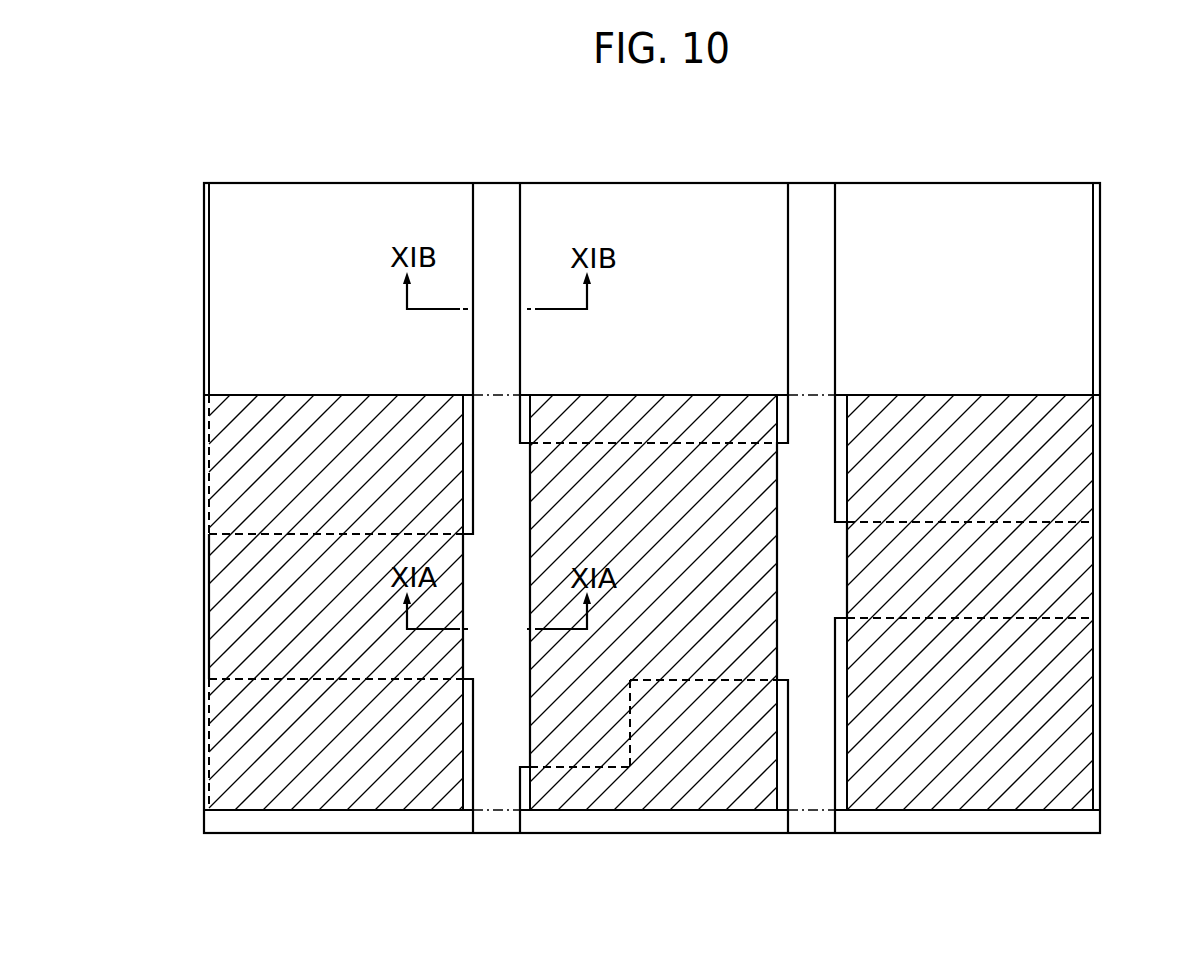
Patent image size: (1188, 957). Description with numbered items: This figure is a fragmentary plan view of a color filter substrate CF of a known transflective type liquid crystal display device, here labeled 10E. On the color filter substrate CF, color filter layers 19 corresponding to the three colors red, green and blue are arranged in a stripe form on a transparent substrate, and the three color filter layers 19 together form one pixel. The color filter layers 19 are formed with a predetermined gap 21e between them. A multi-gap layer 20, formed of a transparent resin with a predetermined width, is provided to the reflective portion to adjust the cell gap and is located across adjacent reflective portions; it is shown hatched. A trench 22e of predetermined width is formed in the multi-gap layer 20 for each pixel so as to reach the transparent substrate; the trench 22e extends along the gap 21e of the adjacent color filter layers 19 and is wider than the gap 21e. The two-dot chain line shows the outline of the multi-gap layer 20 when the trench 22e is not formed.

The color filter substrate 10E is at (727, 111).
The color filter substrate CF is at (1082, 182).
The color filter layers 19 is at (231, 283).
The multi-gap layer 20 is at (231, 608).
The gap 21e is at (492, 194).
The trench 22e is at (495, 823).